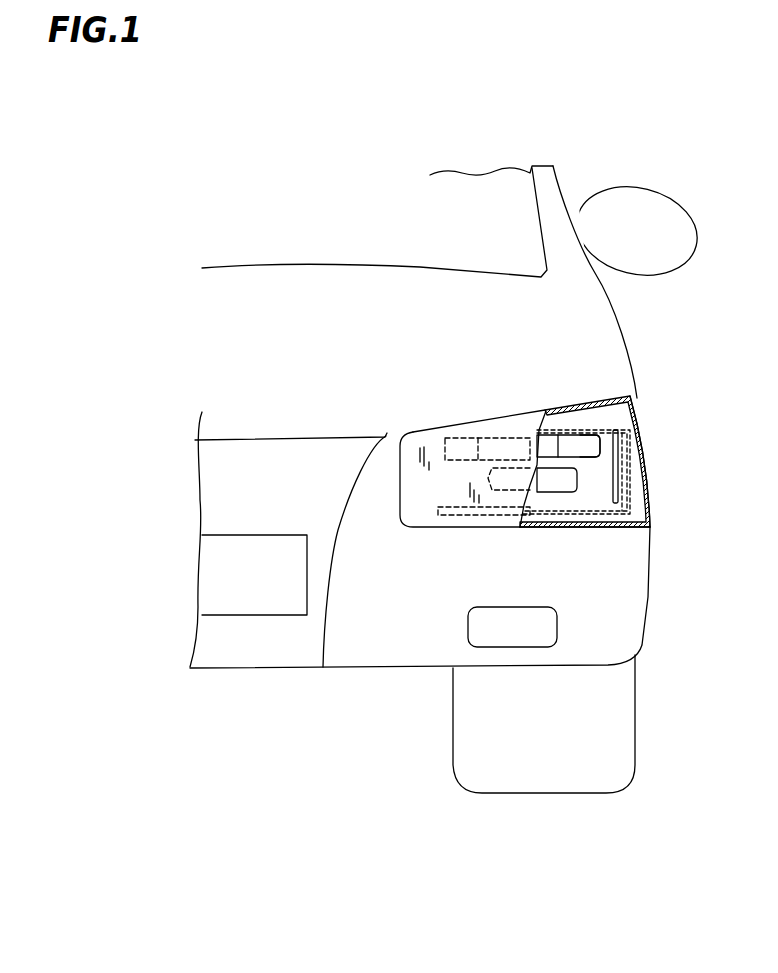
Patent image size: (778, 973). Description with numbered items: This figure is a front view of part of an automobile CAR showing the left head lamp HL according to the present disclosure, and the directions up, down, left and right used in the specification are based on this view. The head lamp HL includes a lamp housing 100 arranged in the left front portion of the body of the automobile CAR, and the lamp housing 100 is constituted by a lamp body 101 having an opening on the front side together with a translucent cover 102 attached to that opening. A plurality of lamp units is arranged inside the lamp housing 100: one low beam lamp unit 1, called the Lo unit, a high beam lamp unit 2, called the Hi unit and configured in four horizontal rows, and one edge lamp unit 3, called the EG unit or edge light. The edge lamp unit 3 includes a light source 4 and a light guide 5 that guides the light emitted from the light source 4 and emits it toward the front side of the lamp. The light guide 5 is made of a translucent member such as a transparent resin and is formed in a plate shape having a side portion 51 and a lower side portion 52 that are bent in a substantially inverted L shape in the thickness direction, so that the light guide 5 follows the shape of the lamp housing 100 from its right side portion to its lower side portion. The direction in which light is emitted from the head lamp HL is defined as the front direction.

The automobile CAR is at (560, 197).
The head lamp HL is at (549, 477).
The lamp housing 100 is at (433, 427).
The translucent cover 102 is at (422, 513).
The lamp body 101 is at (650, 528).
The low beam lamp unit 1 is at (552, 492).
The high beam lamp unit 2 is at (550, 433).
The edge lamp unit 3 is at (636, 498).
The light source 4 is at (610, 430).
The light guide 5 is at (628, 453).
The side portion 51 is at (628, 478).
The lower side portion 52 is at (600, 527).